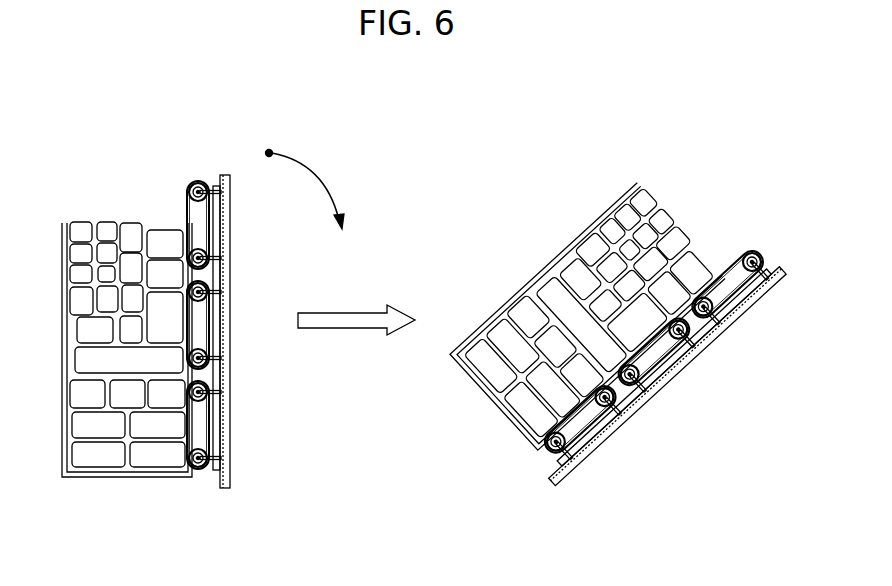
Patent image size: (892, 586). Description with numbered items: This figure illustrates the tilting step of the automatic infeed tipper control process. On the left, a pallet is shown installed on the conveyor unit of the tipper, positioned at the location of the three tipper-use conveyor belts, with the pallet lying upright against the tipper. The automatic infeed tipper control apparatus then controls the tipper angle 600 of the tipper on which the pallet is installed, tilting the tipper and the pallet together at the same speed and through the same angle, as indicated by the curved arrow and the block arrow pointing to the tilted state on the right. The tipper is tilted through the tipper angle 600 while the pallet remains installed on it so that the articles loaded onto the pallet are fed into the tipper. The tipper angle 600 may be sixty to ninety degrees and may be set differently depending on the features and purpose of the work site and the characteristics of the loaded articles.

The tipper angle 600 is at (308, 162).